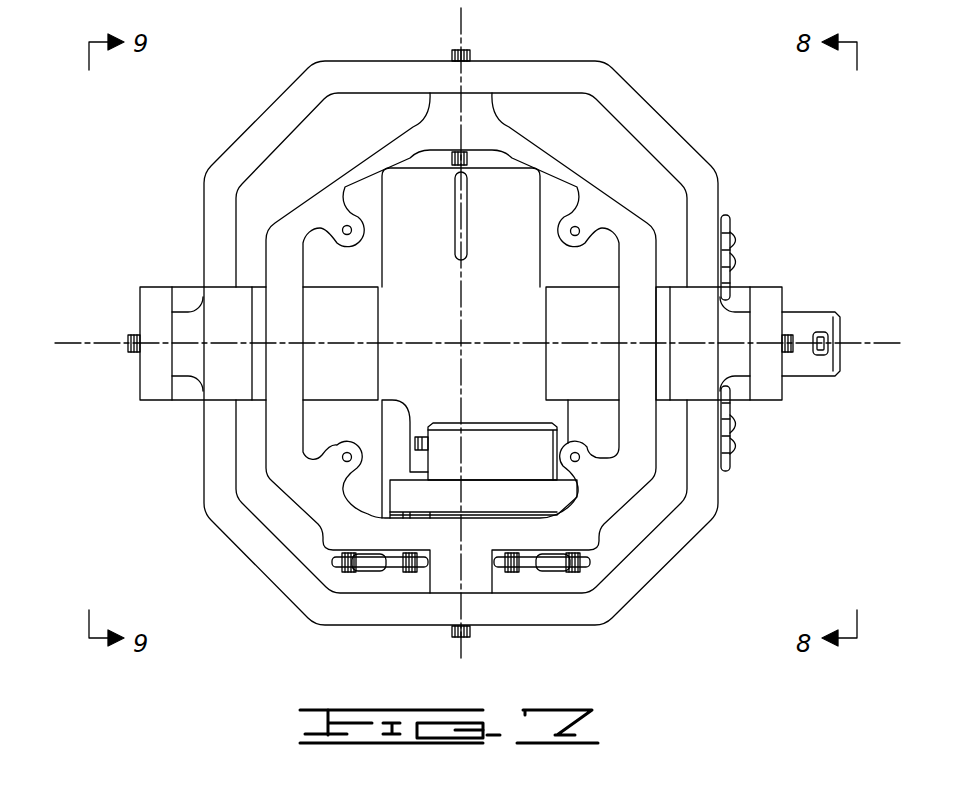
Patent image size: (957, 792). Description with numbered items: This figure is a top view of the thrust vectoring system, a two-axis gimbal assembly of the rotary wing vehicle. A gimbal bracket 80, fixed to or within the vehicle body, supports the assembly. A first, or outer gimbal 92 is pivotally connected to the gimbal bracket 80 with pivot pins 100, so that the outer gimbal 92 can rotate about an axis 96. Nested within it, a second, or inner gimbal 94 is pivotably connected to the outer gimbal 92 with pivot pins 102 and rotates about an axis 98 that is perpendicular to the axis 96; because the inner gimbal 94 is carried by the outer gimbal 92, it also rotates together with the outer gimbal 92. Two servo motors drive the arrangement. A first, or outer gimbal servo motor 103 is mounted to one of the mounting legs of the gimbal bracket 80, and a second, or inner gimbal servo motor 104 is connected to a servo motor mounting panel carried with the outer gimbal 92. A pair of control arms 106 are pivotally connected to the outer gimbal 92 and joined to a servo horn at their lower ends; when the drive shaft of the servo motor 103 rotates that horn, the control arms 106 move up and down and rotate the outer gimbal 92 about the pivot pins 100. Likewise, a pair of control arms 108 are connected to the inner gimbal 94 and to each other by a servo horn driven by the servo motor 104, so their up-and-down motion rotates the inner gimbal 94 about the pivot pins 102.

The gimbal bracket 80 is at (775, 287).
The outer gimbal 92 is at (236, 141).
The inner gimbal 94 is at (620, 472).
The axis 96 is at (75, 342).
The axis 98 is at (450, 47).
The pivot pins 100 is at (130, 353).
The pivot pins 102 is at (470, 50).
The outer gimbal servo motor 103 is at (820, 312).
The inner gimbal servo motor 104 is at (440, 467).
The control arms 106 is at (737, 248).
The control arms 108 is at (372, 570).